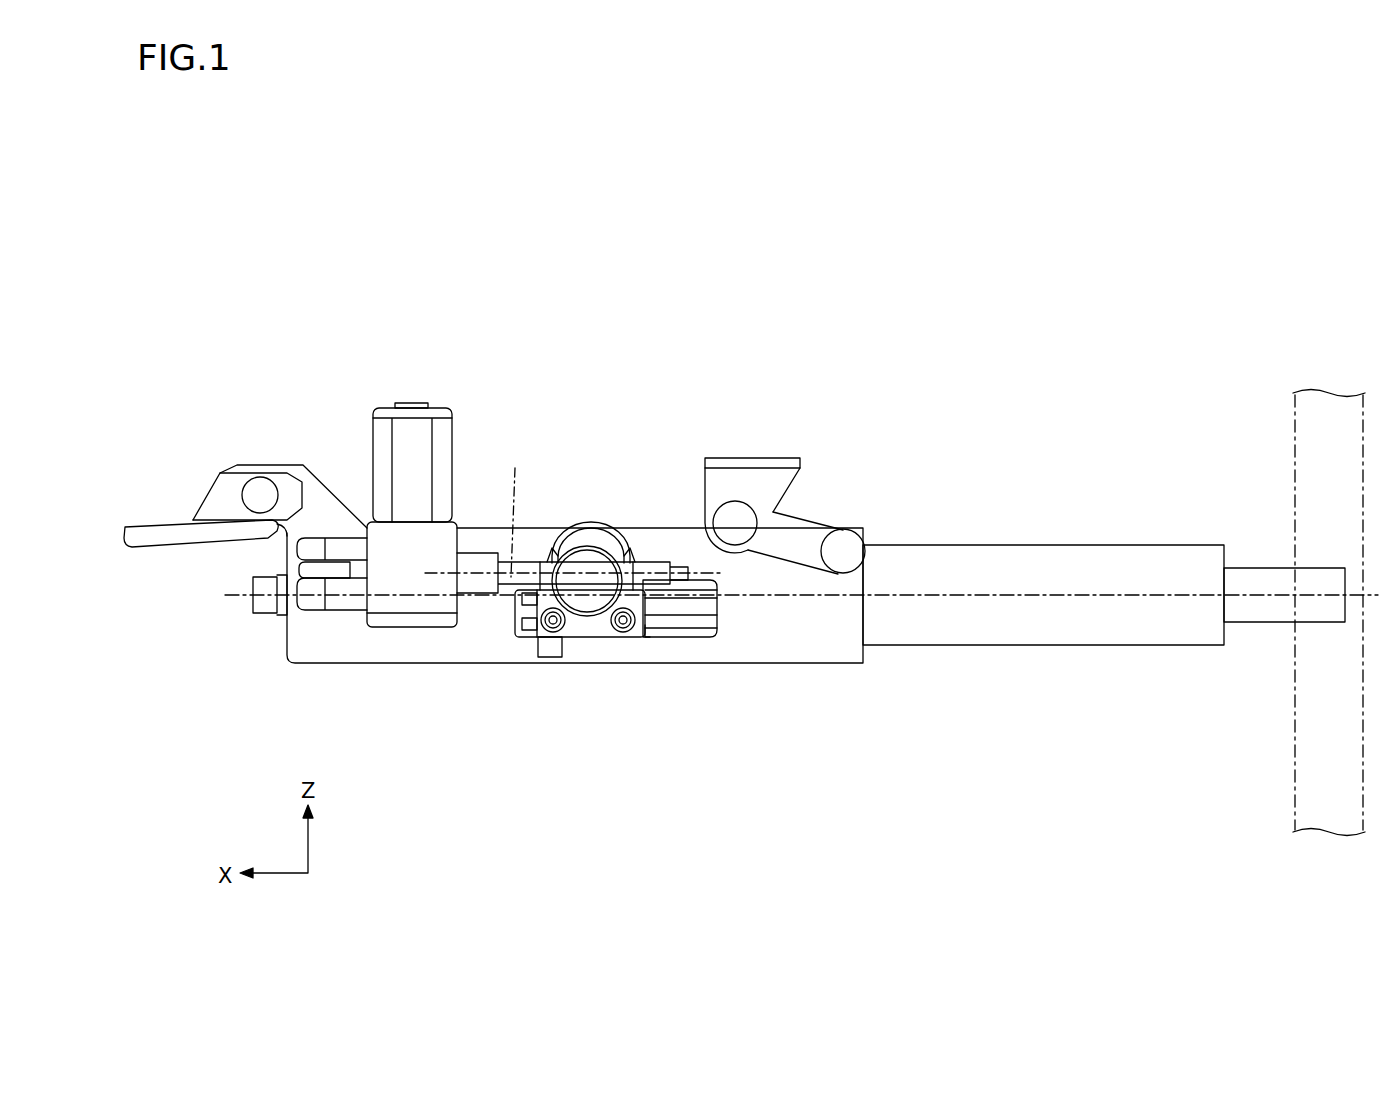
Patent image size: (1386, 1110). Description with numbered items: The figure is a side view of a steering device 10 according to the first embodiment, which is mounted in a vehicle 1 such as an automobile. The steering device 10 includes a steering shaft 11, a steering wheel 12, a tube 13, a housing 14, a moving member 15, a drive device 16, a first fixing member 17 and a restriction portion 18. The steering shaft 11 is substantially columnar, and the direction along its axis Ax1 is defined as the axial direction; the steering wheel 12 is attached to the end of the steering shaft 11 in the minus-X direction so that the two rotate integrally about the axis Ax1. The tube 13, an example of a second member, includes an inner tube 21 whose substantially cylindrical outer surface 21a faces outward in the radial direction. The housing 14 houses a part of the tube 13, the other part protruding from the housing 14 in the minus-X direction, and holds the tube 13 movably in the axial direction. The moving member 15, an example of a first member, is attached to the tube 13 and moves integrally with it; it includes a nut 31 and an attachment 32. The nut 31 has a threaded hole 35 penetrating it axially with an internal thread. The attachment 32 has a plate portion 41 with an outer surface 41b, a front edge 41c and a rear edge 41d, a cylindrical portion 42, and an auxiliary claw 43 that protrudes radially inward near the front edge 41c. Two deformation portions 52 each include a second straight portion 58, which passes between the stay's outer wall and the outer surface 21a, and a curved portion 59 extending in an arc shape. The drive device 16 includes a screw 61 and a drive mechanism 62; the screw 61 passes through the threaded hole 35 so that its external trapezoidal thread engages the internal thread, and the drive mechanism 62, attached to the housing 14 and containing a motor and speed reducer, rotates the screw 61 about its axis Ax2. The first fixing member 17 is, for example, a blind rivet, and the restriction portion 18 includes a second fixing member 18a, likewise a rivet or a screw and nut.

The vehicle 1 is at (208, 220).
The steering device 10 is at (1104, 590).
The steering shaft 11 is at (1268, 612).
The steering wheel 12 is at (1293, 398).
The tube 13 is at (1043, 568).
The inner tube 21 is at (1043, 568).
The outer surface 21a is at (1022, 565).
The housing 14 is at (797, 653).
The moving member 15 is at (611, 487).
The attachment 32 is at (625, 537).
The drive device 16 is at (412, 562).
The drive mechanism 62 is at (399, 630).
The first fixing member 17 is at (623, 634).
The restriction portion 18 is at (565, 696).
The second fixing member 18a is at (553, 640).
The nut 31 is at (587, 560).
The threaded hole 35 is at (711, 699).
The deformation portion 52 is at (711, 699).
The second straight portion 58 is at (697, 630).
The plate portion 41 is at (586, 657).
The outer surface 41b is at (588, 634).
The front edge 41c is at (522, 640).
The rear edge 41d is at (680, 630).
The cylindrical portion 42 is at (600, 540).
The auxiliary claw 43 is at (541, 660).
The curved portion 59 is at (520, 628).
The screw 61 is at (535, 560).
The axis Ax1 is at (1072, 598).
The axis Ax2 is at (512, 510).